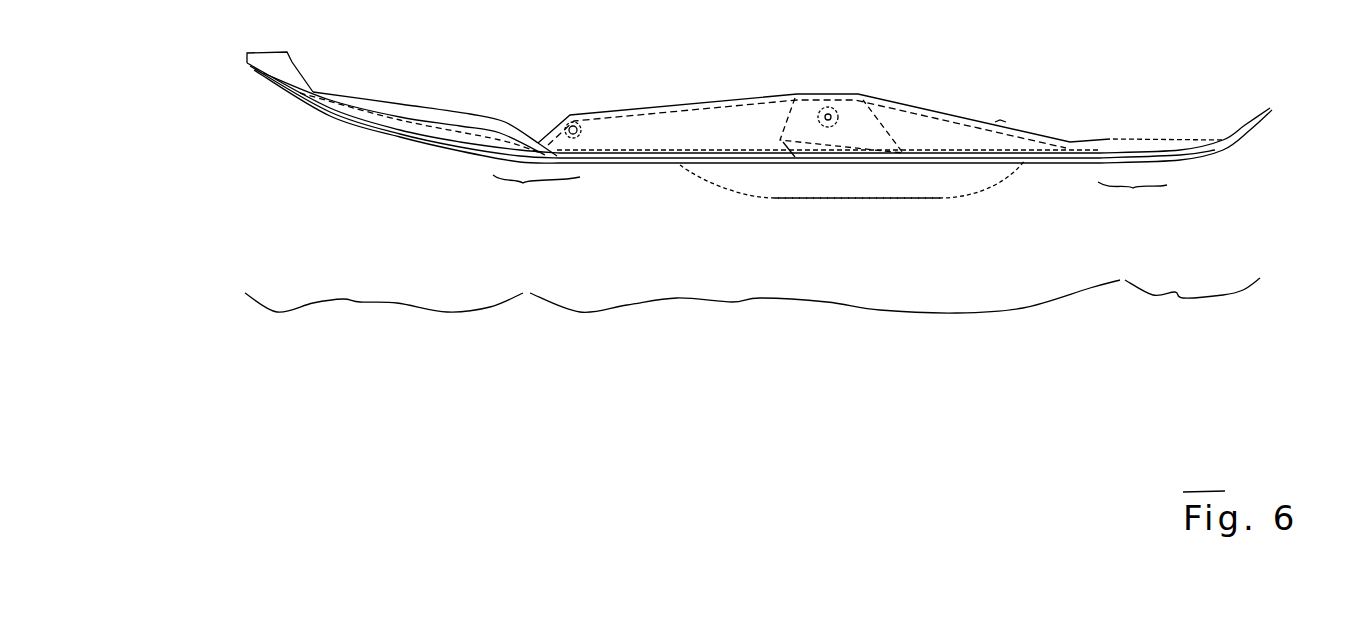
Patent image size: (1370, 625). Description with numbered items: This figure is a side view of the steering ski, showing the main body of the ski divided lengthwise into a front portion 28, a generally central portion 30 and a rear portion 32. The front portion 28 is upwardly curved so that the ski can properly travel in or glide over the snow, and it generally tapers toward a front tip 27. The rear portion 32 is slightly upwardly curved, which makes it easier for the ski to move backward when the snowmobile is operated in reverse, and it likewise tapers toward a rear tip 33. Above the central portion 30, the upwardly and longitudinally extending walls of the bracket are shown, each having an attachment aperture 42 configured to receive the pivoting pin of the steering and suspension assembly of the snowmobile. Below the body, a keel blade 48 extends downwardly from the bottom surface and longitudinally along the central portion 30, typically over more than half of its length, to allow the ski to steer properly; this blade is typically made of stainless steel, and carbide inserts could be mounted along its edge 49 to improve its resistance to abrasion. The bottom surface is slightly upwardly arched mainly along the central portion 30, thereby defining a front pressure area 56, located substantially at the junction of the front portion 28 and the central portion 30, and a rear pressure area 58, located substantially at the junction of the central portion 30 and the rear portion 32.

The front tip 27 is at (247, 55).
The rear tip 33 is at (1270, 108).
The attachment aperture 42 is at (830, 118).
The edge of the keel blade 49 is at (793, 200).
The keel blade 48 is at (890, 190).
The front pressure area 56 is at (522, 193).
The rear pressure area 58 is at (1113, 200).
The front portion 28 is at (360, 318).
The central portion 30 is at (732, 318).
The rear portion 32 is at (1183, 310).